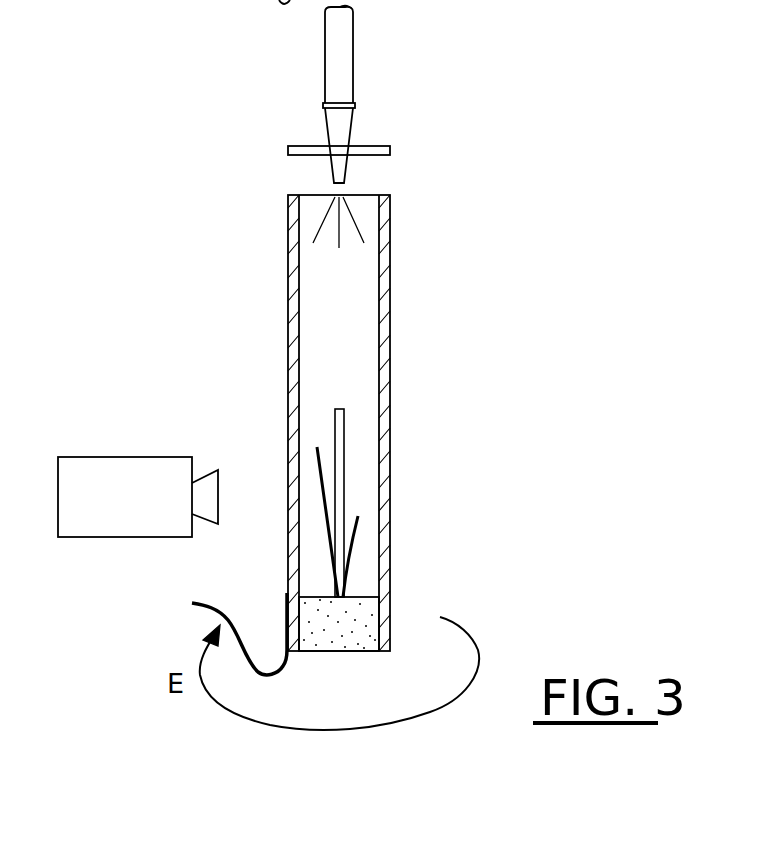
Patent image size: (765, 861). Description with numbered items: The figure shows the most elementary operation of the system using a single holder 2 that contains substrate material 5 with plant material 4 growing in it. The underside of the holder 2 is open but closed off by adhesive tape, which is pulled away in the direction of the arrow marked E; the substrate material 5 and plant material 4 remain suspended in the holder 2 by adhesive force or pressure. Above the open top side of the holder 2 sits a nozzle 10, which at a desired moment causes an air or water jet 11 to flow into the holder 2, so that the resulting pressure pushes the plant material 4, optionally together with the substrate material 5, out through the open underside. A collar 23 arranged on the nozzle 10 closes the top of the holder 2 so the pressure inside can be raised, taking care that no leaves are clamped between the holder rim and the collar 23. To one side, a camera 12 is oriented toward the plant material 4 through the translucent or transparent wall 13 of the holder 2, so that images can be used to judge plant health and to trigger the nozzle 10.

The nozzle 10 is at (345, 53).
The collar 23 is at (366, 150).
The air or water jet 11 is at (357, 208).
The holder 2 is at (352, 322).
The wall 13 is at (288, 358).
The plant material 4 is at (338, 475).
The substrate material 5 is at (362, 615).
The camera 12 is at (112, 475).